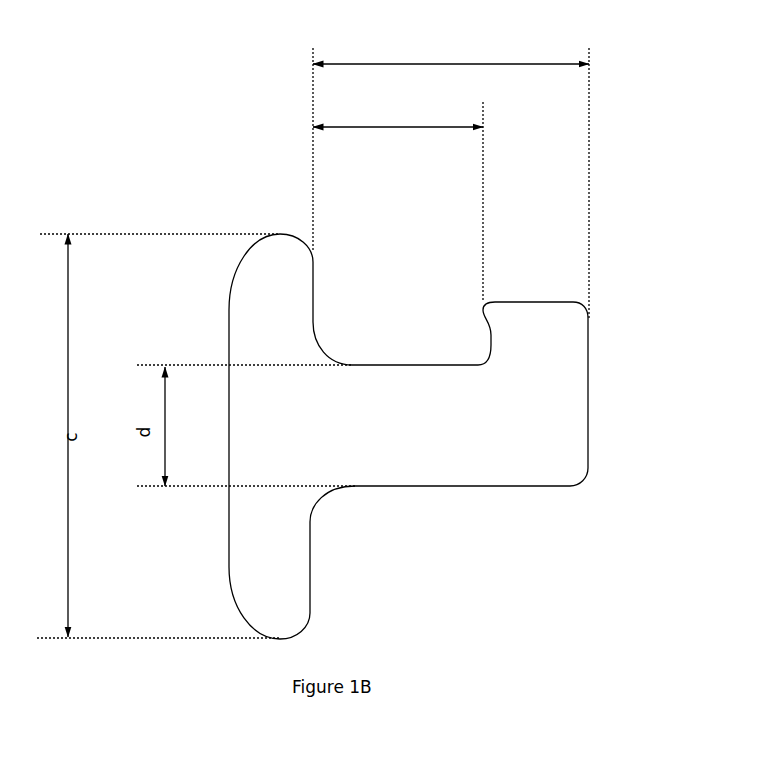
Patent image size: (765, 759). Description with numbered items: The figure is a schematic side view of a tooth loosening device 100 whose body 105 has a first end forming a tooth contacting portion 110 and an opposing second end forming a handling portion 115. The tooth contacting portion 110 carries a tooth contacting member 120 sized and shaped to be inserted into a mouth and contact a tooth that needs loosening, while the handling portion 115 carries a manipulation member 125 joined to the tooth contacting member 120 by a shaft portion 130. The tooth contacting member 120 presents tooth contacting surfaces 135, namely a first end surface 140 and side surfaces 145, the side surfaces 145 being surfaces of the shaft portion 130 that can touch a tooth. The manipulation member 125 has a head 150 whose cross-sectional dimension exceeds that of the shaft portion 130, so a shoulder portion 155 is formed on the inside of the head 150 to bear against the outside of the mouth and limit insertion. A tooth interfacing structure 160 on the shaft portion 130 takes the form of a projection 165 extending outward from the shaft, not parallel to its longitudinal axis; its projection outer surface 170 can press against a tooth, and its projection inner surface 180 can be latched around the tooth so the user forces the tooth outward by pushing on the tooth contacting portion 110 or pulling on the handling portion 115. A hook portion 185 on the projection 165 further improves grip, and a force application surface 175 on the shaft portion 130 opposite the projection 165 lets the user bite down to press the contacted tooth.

The tooth loosening device 100 is at (617, 108).
The body 105 is at (618, 160).
The tooth contacting portion 110 is at (620, 285).
The handling portion 115 is at (165, 225).
The tooth contacting member 120 is at (566, 222).
The manipulation member 125 is at (215, 345).
The shaft portion 130 is at (502, 518).
The tooth contacting surfaces 135 is at (615, 392).
The first end surface 140 is at (590, 405).
The side surfaces 145 is at (582, 435).
The head 150 is at (233, 585).
The shoulder portion 155 is at (315, 567).
The tooth interfacing structure 160 is at (503, 237).
The projection 165 is at (581, 333).
The projection outer surface 170 is at (533, 300).
The force application surface 175 is at (452, 488).
The projection inner surface 180 is at (483, 328).
The hook portion 185 is at (483, 297).